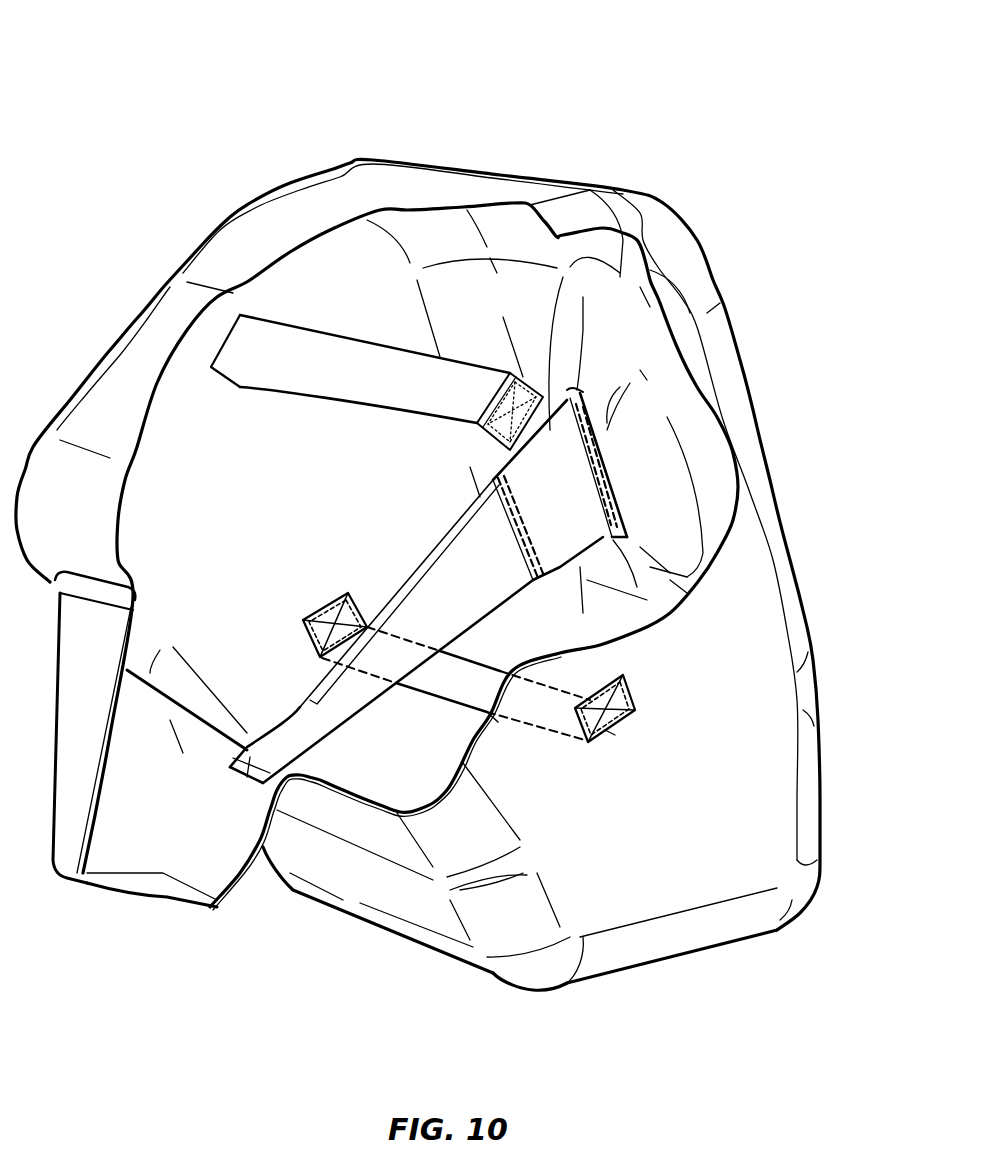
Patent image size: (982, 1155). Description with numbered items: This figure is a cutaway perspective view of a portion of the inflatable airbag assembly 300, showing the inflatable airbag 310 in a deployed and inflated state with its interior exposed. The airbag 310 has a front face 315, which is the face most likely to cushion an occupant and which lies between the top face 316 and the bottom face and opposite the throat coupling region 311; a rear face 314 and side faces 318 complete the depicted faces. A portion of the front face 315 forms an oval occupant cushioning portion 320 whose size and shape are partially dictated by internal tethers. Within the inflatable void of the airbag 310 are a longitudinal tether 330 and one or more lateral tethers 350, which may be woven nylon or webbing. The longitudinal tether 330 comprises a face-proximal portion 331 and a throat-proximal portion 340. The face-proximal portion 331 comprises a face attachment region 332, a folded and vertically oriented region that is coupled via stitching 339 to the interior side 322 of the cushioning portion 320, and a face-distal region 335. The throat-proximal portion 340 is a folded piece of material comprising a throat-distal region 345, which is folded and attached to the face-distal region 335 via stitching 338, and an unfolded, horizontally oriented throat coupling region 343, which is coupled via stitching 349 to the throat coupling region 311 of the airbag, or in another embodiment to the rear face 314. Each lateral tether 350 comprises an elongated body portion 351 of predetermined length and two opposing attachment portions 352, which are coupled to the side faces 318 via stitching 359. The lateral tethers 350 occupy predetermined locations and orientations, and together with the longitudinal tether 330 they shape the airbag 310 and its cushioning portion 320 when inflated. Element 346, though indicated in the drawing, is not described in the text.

The airbag assembly 300 is at (128, 88).
The inflatable airbag 310 is at (223, 178).
The throat coupling region 311 is at (230, 860).
The rear face 314 is at (377, 891).
The front face 315 is at (514, 304).
The top face 316 is at (391, 196).
The side faces 318 is at (679, 844).
The occupant cushioning portion 320 is at (629, 327).
The interior side 322 is at (687, 411).
The longitudinal tether 330 is at (570, 499).
The face-proximal portion 331 is at (572, 542).
The face attachment region 332 is at (593, 437).
The face-distal region 335 is at (513, 477).
The stitching 338 is at (493, 503).
The stitching 339 is at (627, 495).
The throat-proximal portion 340 is at (433, 590).
The throat coupling region 343 is at (305, 715).
The throat-distal region 345 is at (480, 547).
The strap edge 346 is at (403, 587).
The stitching 349 is at (253, 778).
The lateral tethers 350 is at (287, 364).
The elongated body portion 351 is at (490, 727).
The attachment portions 352 is at (322, 598).
The stitching 359 is at (610, 730).